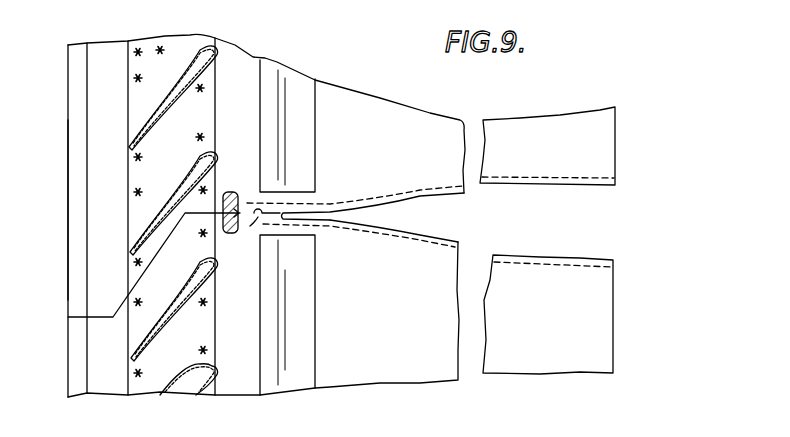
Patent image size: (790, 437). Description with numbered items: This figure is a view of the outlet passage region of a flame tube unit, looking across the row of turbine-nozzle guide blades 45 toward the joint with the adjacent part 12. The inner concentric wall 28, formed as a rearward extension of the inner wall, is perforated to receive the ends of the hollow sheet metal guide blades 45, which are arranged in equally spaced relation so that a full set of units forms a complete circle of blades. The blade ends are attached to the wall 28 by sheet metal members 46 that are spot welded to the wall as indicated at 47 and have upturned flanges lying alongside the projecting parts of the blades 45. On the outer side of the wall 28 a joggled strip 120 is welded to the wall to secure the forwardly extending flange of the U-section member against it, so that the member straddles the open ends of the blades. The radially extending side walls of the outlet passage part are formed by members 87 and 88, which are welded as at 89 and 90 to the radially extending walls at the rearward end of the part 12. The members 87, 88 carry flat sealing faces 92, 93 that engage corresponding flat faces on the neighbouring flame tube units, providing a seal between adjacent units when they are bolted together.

The inner concentric wall 28 is at (87, 215).
The spot weld 47 is at (137, 158).
The sheet metal member 46 is at (150, 183).
The turbine-nozzle guide blade 45 is at (135, 217).
The flat sealing face 92 is at (252, 213).
The side wall member 88 is at (256, 218).
The flat sealing face 93 is at (262, 222).
The side wall member 87 is at (277, 205).
The weld 89 is at (302, 209).
The weld 90 is at (302, 221).
The joggled strip 120 is at (300, 307).
The flame tube part 12 is at (442, 267).